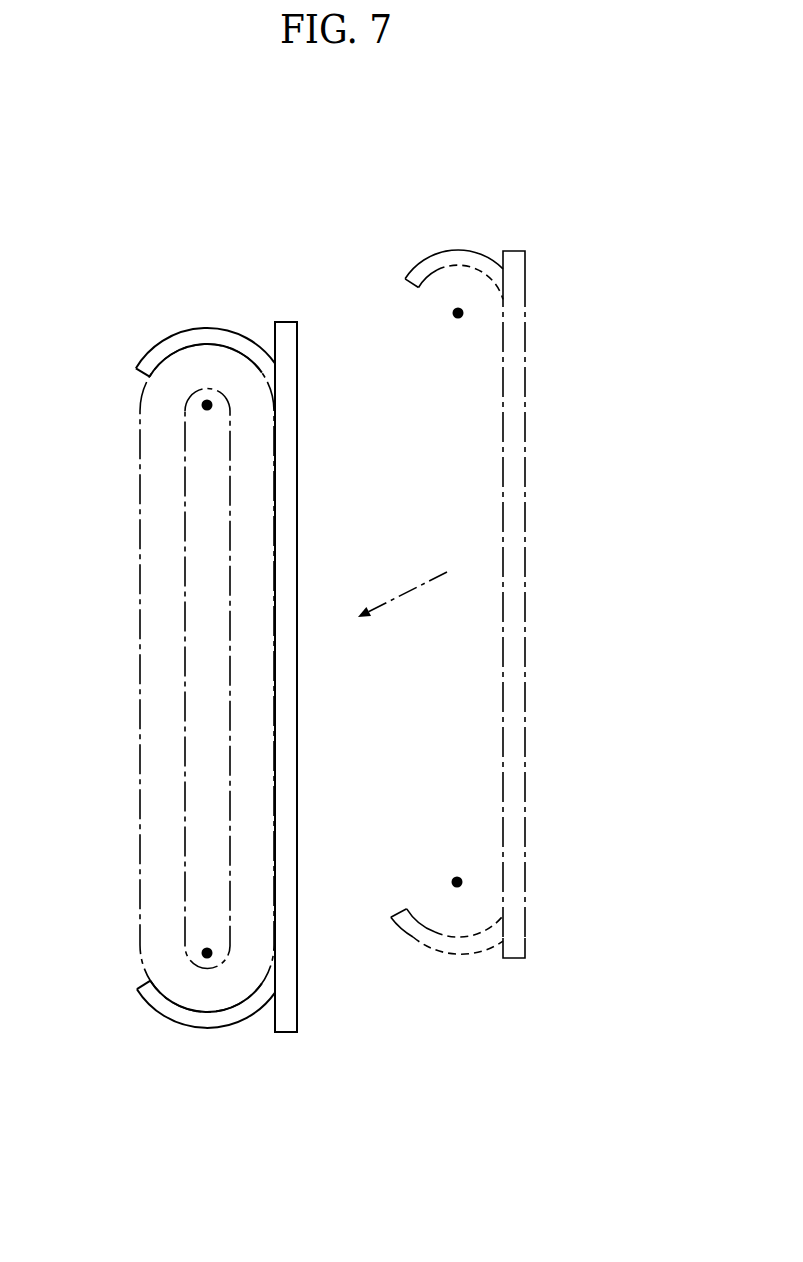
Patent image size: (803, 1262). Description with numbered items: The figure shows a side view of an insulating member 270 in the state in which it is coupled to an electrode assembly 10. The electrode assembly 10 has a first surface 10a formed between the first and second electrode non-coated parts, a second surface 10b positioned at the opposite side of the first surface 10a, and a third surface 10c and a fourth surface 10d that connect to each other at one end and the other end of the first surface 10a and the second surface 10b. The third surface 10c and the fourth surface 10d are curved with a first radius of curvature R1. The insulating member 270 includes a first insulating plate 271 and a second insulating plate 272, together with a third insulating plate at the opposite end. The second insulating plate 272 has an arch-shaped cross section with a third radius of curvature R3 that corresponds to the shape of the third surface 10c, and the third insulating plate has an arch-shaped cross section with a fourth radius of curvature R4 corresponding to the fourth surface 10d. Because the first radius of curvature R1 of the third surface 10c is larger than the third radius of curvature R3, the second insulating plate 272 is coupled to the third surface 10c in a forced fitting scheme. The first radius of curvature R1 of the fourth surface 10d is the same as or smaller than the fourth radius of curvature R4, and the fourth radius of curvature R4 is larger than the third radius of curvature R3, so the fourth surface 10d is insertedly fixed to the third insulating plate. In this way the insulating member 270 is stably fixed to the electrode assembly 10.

The electrode assembly 10 is at (136, 688).
The first surface 10a is at (275, 740).
The second surface 10b is at (140, 817).
The third surface 10c is at (196, 343).
The fourth surface 10d is at (208, 1017).
The first radius of curvature R1 is at (207, 405).
The insulating member 270 is at (545, 388).
The first insulating plate 271 is at (513, 562).
The second insulating plate 272 is at (457, 260).
The third radius of curvature R3 is at (437, 274).
The fourth radius of curvature R4 is at (457, 882).